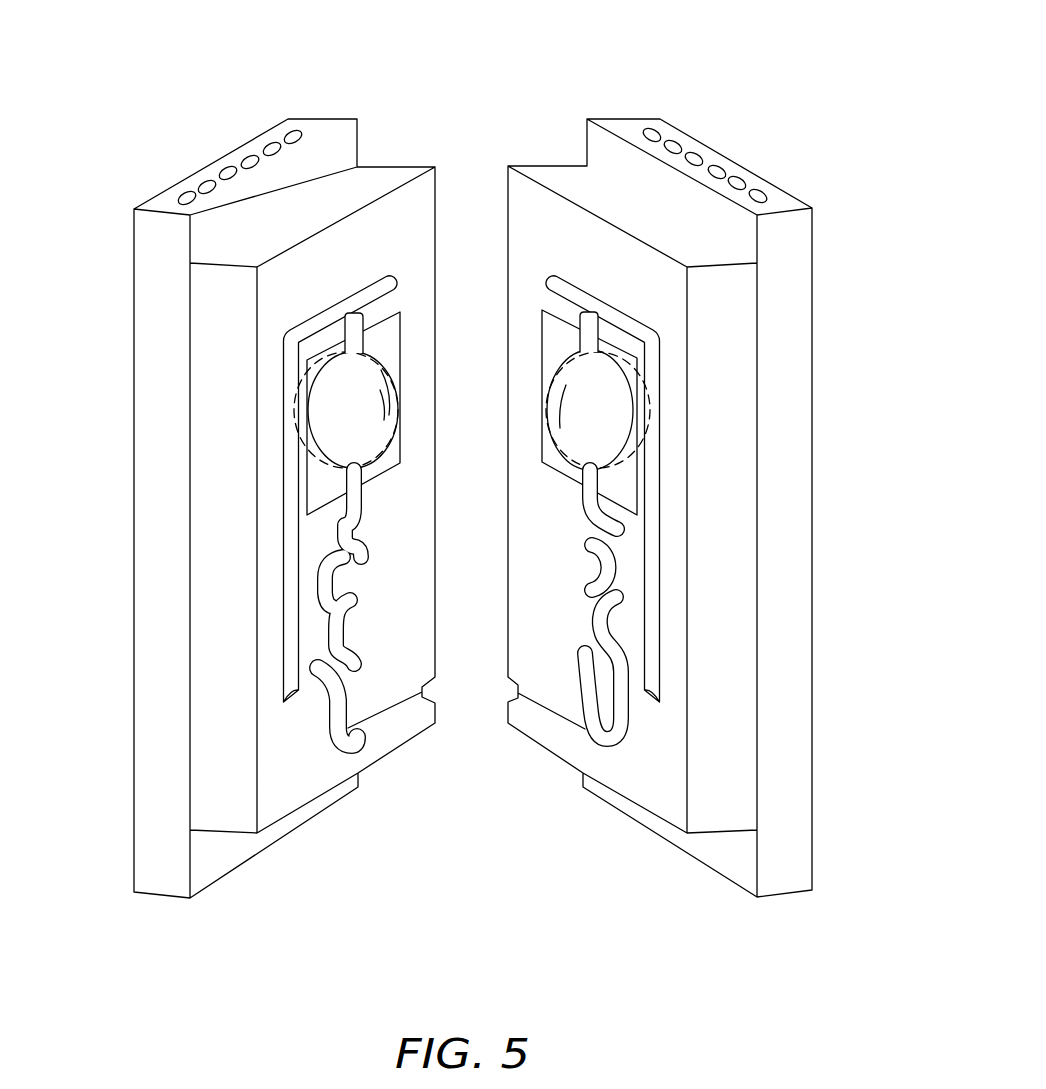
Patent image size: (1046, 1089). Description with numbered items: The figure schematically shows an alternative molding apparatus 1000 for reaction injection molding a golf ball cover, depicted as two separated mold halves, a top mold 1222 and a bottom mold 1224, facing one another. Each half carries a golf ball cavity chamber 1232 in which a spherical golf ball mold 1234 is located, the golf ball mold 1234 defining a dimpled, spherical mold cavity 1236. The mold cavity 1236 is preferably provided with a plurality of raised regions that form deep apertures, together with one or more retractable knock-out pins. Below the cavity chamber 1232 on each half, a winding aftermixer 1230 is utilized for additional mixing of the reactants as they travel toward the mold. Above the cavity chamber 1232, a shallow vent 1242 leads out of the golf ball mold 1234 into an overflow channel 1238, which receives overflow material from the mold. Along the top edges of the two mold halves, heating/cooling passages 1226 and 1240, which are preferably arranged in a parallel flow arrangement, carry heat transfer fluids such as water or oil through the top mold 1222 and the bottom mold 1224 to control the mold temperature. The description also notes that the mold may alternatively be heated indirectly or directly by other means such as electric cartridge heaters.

The molding apparatus 1000 is at (478, 458).
The top mold 1222 is at (155, 643).
The bottom mold 1224 is at (795, 648).
The heating/cooling passages 1226 is at (250, 162).
The heating/cooling passages 1240 is at (761, 196).
The overflow channel 1238 is at (545, 279).
The shallow vent 1242 is at (357, 322).
The golf ball cavity chamber 1232 is at (300, 377).
The mold cavity 1236 is at (363, 418).
The golf ball mold 1234 is at (577, 442).
The aftermixer 1230 is at (588, 570).